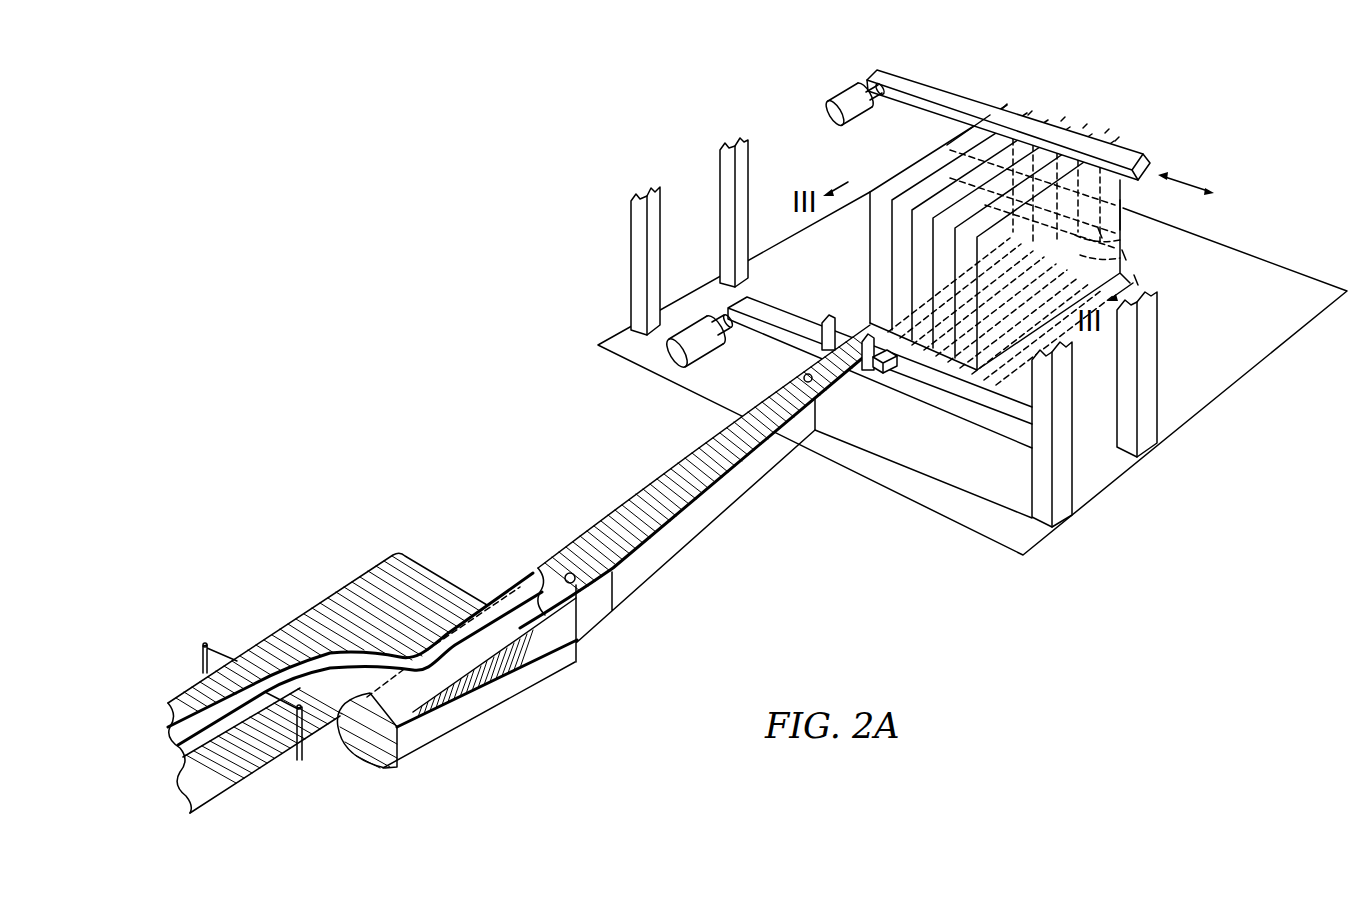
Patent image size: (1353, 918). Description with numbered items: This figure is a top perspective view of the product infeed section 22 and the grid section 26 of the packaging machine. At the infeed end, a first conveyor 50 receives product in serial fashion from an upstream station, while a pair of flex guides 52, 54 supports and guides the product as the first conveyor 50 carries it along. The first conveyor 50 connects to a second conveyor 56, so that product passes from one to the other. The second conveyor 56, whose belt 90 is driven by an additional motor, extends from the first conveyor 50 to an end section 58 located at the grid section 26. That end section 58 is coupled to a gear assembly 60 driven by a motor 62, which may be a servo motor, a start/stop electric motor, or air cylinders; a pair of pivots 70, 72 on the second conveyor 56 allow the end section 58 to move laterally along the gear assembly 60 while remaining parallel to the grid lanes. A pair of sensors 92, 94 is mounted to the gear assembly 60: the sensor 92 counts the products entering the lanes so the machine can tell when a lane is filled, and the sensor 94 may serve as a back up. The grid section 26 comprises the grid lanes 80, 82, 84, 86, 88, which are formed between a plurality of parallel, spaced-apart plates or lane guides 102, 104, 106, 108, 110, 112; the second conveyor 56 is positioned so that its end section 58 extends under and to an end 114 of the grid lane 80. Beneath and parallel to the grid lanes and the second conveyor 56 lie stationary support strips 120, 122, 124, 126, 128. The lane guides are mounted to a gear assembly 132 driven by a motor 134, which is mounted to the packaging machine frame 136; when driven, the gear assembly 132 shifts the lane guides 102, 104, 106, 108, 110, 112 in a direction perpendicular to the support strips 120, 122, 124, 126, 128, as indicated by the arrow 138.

The product infeed section 22 is at (493, 426).
The grid section 26 is at (787, 76).
The first conveyor 50 is at (332, 592).
The flex guide 52 is at (187, 695).
The flex guide 54 is at (222, 725).
The second conveyor 56 is at (696, 493).
The end section 58 is at (901, 286).
The gear assembly 60 is at (775, 300).
The motor 62 is at (677, 355).
The pivot 70 is at (567, 572).
The pivot 72 is at (808, 373).
The grid lane 80 is at (1019, 106).
The grid lane 82 is at (1045, 113).
The grid lane 84 is at (1076, 121).
The grid lane 86 is at (1096, 126).
The grid lane 88 is at (1116, 134).
The belt 90 is at (667, 484).
The sensor 92 is at (844, 318).
The sensor 94 is at (865, 372).
The plate (lane guide) 102 is at (1001, 103).
The plate (lane guide) 104 is at (1030, 110).
The plate (lane guide) 106 is at (1062, 115).
The plate (lane guide) 108 is at (1087, 123).
The plate (lane guide) 110 is at (1109, 128).
The plate (lane guide) 112 is at (1124, 141).
The end of grid lane 114 is at (942, 143).
The support strip 120 is at (908, 173).
The support strip 122 is at (1123, 213).
The support strip 124 is at (1100, 233).
The support strip 126 is at (1124, 255).
The support strip 128 is at (1137, 280).
The gear assembly 132 is at (898, 70).
The motor 134 is at (845, 95).
The packaging machine frame 136 is at (725, 175).
The arrow 138 is at (1183, 180).